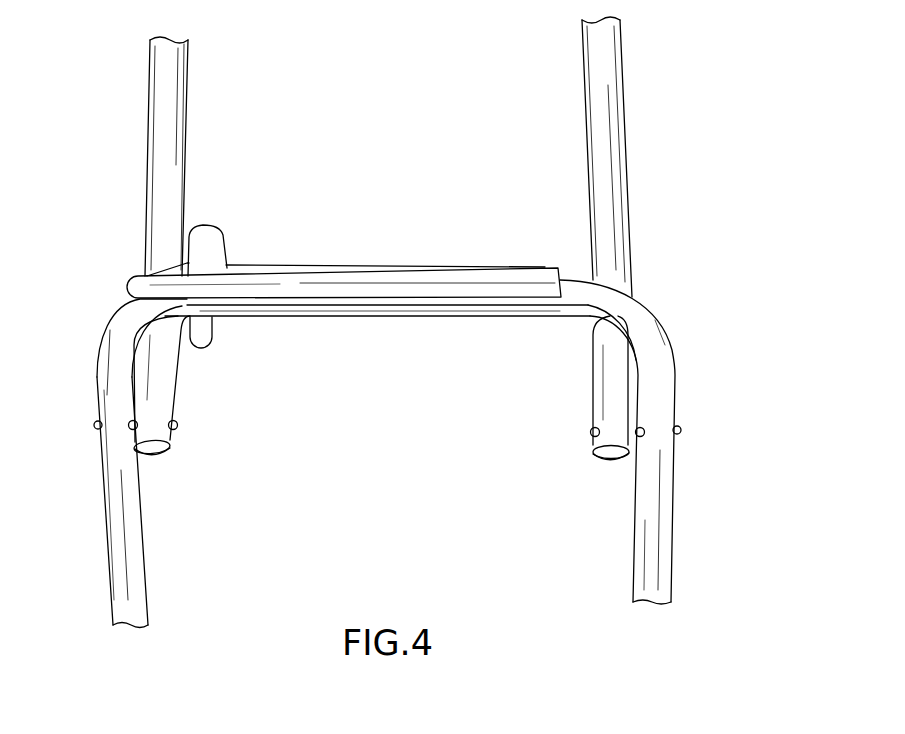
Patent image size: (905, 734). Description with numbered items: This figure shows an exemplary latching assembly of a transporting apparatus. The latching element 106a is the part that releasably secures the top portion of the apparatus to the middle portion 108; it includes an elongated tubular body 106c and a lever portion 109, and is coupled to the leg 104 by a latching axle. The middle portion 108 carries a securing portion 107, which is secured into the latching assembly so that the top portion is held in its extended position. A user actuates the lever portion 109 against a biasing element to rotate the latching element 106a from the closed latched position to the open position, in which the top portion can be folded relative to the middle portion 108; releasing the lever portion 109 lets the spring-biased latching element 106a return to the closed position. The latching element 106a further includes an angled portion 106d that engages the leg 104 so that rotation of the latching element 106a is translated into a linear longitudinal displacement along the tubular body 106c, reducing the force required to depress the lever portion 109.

The leg 104 is at (143, 153).
The latching element 106a is at (120, 225).
The elongated tubular body 106c is at (367, 272).
The angled portion 106d is at (165, 267).
The securing portion 107 is at (443, 308).
The middle portion 108 is at (675, 470).
The lever portion 109 is at (209, 226).